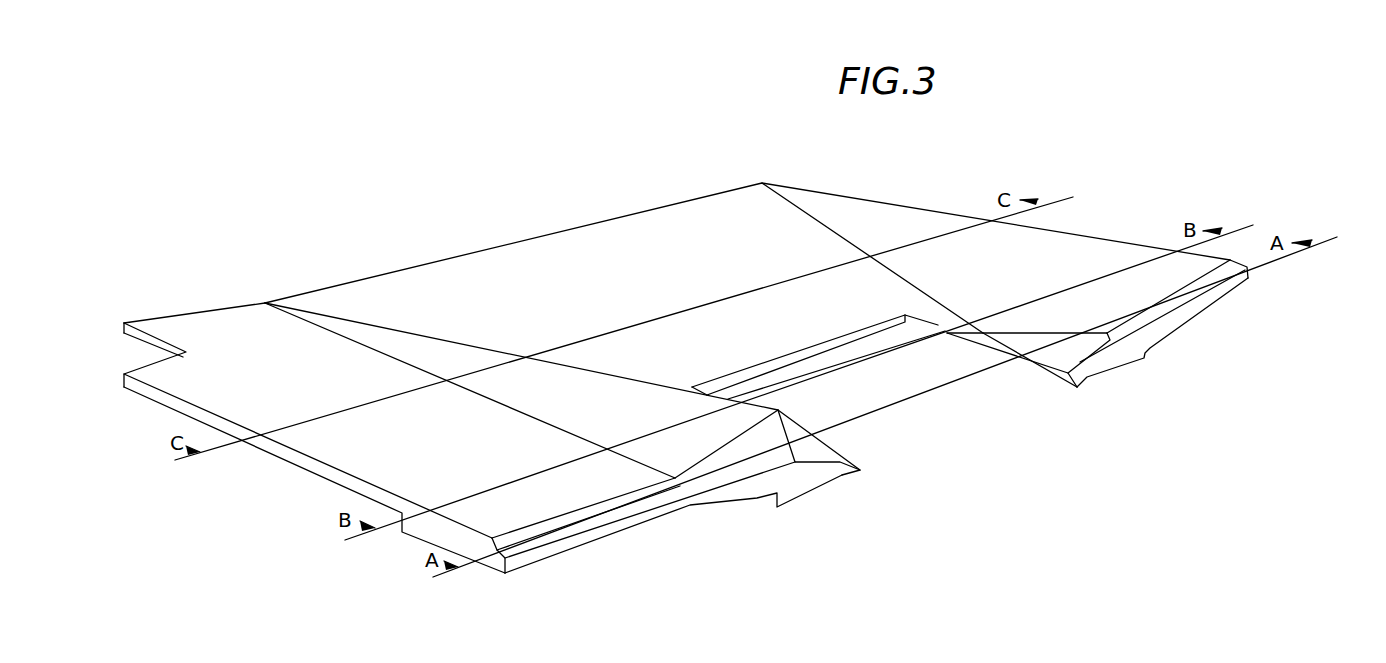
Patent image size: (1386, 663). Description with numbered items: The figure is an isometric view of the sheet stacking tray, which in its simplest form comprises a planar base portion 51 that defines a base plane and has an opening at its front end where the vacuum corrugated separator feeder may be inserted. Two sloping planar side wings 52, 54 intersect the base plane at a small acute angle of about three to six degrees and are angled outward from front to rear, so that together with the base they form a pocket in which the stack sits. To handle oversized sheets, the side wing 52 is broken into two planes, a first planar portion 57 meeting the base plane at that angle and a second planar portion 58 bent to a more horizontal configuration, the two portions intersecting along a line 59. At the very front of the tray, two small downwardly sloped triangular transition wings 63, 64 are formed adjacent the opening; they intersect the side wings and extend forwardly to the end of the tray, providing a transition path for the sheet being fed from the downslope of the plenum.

The planar base portion 51 is at (534, 264).
The sloping planar side wing 52 is at (624, 408).
The sloping planar side wing 54 is at (1068, 250).
The first planar portion 57 is at (512, 388).
The second planar portion 58 is at (305, 438).
The line 59 is at (490, 400).
The transition wing 63 is at (813, 452).
The transition wing 64 is at (1062, 350).